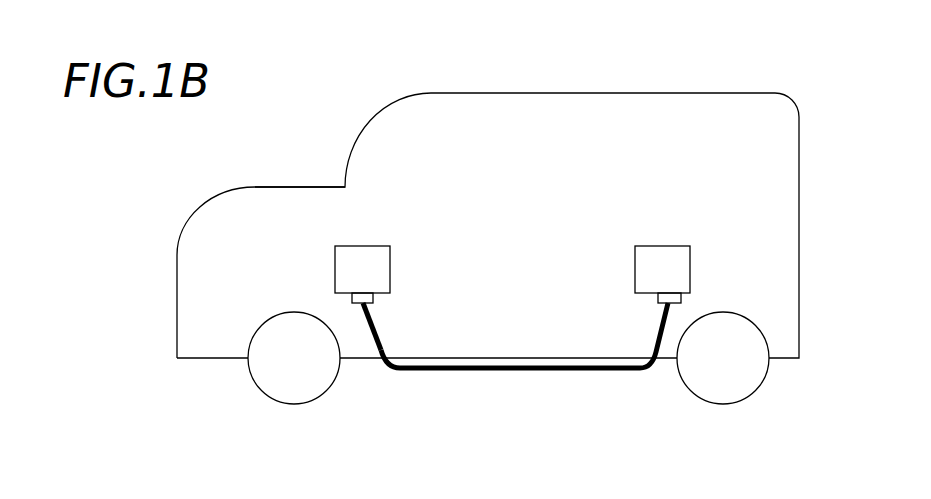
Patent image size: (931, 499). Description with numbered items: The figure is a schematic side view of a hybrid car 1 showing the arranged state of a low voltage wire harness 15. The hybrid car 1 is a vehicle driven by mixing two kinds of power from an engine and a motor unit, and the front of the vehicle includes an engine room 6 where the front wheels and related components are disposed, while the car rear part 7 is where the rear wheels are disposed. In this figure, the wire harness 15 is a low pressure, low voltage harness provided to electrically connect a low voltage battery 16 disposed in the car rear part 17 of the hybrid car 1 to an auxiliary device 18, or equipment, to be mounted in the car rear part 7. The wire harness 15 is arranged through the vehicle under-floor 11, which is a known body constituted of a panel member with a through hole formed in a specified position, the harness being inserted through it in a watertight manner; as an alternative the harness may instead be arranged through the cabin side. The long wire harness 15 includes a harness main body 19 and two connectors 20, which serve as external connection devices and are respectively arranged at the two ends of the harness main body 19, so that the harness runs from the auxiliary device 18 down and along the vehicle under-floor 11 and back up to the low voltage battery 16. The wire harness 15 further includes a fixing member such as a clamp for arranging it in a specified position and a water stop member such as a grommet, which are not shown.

The hybrid car 1 is at (645, 93).
The engine room 6 is at (193, 330).
The car rear part 7 is at (778, 325).
The car rear part 17 is at (315, 200).
The auxiliary device 18 is at (376, 252).
The low voltage battery 16 is at (664, 252).
The connector 20 is at (374, 298).
The harness main body 19 is at (386, 345).
The wire harness 15 is at (422, 372).
The vehicle under-floor 11 is at (590, 362).